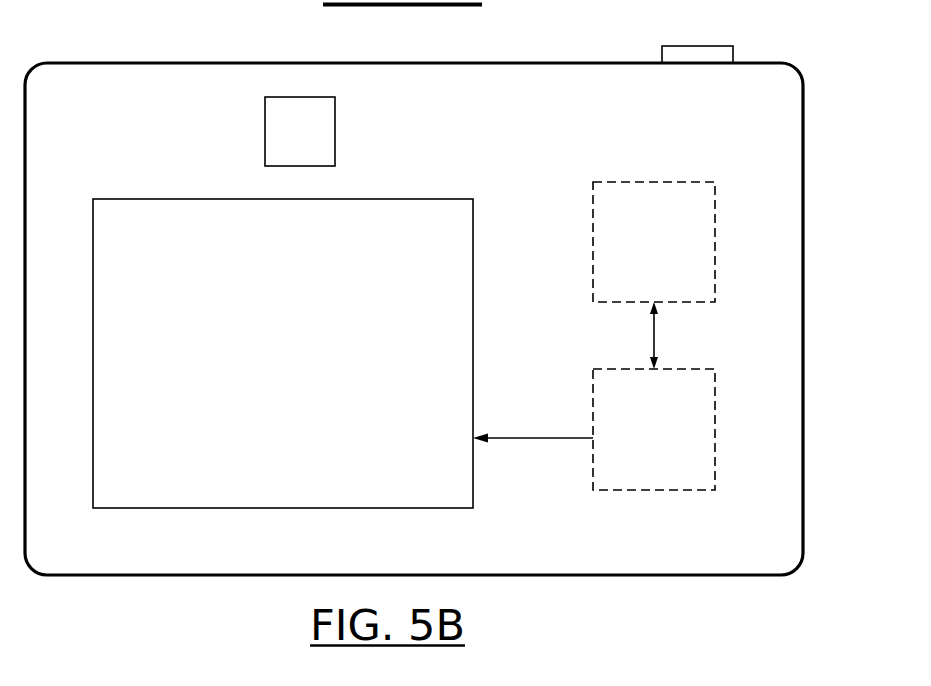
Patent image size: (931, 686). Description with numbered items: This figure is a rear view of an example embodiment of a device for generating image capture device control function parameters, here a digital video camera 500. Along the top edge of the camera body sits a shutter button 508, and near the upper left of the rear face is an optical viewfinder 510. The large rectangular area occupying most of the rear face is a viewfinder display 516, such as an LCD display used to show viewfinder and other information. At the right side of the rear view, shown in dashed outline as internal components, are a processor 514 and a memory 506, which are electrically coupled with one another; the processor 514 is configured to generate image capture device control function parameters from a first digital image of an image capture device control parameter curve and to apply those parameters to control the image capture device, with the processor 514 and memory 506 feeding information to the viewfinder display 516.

The digital video camera 500 is at (414, 319).
The memory 506 is at (654, 429).
The shutter button 508 is at (694, 45).
The optical viewfinder 510 is at (300, 131).
The processor 514 is at (654, 242).
The viewfinder display 516 is at (283, 353).